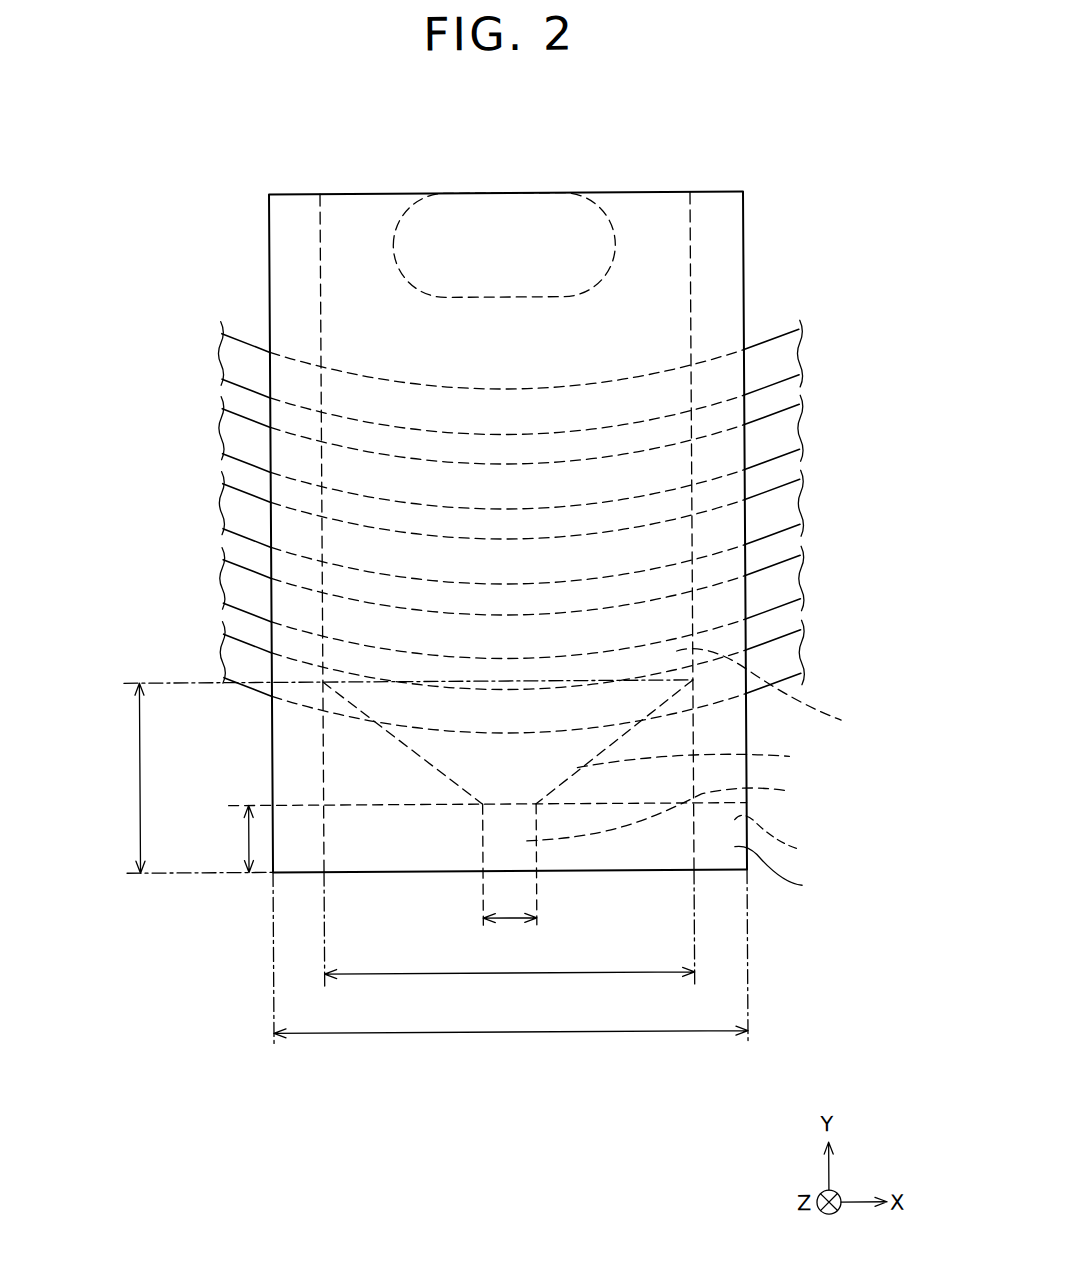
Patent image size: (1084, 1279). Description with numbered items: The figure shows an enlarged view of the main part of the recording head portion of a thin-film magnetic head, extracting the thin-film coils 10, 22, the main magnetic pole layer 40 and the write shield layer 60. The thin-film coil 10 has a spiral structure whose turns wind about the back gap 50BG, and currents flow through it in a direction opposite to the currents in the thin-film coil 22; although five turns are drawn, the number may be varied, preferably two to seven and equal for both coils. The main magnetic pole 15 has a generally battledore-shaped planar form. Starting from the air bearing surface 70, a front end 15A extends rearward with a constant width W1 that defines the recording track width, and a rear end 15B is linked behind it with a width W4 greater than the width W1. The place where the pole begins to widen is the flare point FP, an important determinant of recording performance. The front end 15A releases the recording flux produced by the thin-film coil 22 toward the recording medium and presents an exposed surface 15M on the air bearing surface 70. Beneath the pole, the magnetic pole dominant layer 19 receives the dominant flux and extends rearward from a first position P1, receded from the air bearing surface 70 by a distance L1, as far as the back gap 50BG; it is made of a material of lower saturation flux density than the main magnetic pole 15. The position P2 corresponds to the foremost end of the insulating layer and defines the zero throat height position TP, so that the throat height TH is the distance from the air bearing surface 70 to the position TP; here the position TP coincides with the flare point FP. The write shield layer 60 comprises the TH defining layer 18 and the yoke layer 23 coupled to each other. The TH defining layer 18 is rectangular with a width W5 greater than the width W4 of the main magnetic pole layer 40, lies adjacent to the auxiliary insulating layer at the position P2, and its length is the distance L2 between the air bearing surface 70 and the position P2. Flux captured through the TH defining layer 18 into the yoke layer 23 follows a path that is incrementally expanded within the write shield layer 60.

The thin-film coil 10 is at (490, 485).
The thin-film coil 22 is at (238, 351).
The back gap 50BG is at (427, 230).
The main magnetic pole 15 is at (825, 745).
The front end 15A is at (681, 812).
The rear end 15B is at (705, 764).
The exposed surface 15M is at (519, 884).
The magnetic pole dominant layer 19 is at (776, 692).
The main magnetic pole layer 40 is at (875, 702).
The TH defining layer 18 is at (782, 841).
The yoke layer 23 is at (782, 874).
The write shield layer 60 is at (825, 839).
The air bearing surface 70 is at (387, 884).
The first position P1 is at (100, 686).
The position P2 is at (181, 736).
The zero throat height position TP is at (181, 736).
The flare point FP is at (205, 808).
The distance L1 is at (190, 777).
The distance L2 is at (209, 840).
The throat height TH is at (209, 840).
The width W1 is at (508, 920).
The width W4 is at (508, 975).
The width W5 is at (508, 1034).